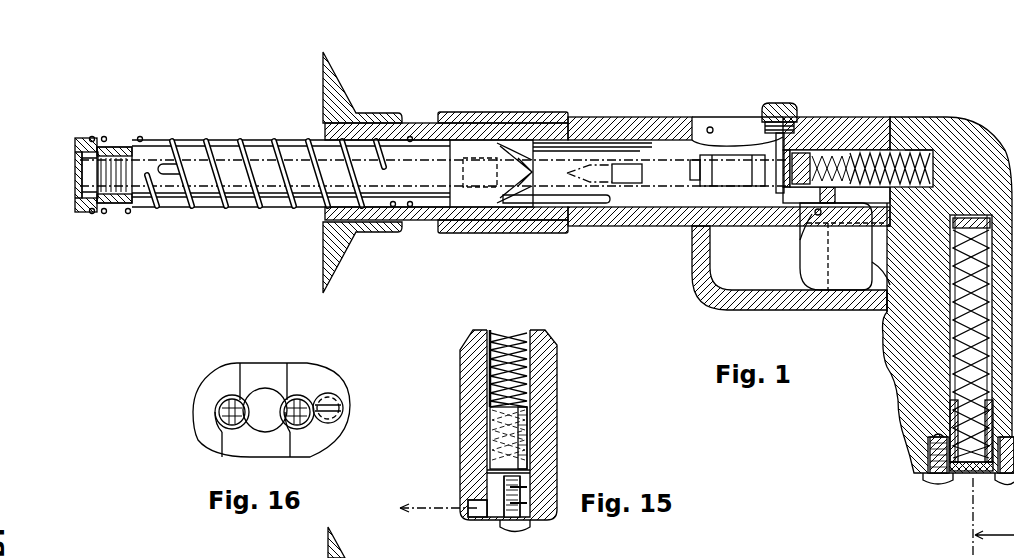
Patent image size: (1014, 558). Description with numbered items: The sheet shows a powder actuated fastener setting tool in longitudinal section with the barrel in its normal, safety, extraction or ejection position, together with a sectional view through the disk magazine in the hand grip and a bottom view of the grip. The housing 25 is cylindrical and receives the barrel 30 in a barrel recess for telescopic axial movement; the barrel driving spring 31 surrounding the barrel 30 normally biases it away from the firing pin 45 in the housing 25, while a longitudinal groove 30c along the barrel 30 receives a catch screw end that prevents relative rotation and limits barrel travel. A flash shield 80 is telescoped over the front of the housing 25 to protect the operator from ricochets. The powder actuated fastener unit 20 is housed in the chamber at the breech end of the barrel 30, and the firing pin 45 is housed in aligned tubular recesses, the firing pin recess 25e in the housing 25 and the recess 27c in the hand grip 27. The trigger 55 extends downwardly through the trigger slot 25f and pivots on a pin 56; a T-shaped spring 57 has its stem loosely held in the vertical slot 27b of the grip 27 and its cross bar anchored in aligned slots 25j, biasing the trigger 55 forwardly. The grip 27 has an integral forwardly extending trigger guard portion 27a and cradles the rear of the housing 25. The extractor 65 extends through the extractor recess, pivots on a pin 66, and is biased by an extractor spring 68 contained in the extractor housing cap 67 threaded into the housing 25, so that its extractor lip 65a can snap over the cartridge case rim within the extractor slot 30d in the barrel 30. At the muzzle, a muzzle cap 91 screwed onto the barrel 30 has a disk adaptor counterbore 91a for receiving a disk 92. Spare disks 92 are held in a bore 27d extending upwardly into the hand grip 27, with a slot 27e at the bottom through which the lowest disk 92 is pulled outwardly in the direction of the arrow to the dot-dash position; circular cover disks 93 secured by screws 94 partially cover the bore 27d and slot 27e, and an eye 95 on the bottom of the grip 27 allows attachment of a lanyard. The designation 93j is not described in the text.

In FIG. 1, the muzzle cap 91 is at (74, 143).
In FIG. 1, the disk adaptor counterbore 91a is at (76, 190).
In FIG. 1, the barrel 30 is at (179, 207).
In FIG. 1, the groove 30c is at (274, 178).
In FIG. 1, the extractor slot 30d is at (525, 165).
In FIG. 1, the barrel driving spring 31 is at (208, 141).
In FIG. 1, the flash shield 80 is at (342, 80).
In FIG. 1, the extractor 65 is at (748, 120).
In FIG. 1, the extractor lip 65a is at (642, 150).
In FIG. 1, the pin 66 is at (708, 126).
In FIG. 1, the extractor housing cap 67 is at (793, 103).
In FIG. 1, the extractor spring 68 is at (781, 138).
In FIG. 1, the powder actuated fastener unit 20 is at (712, 186).
In FIG. 1, the firing pin 45 is at (782, 191).
In FIG. 1, the housing 25 is at (878, 118).
In FIG. 1, the firing pin recess 25e is at (853, 148).
In FIG. 1, the trigger slot 25f is at (800, 216).
In FIG. 1, the slots 25j is at (886, 209).
In FIG. 1, the hand grip 27 is at (898, 380).
In FIG. 15, the hand grip 27 is at (557, 357).
In FIG. 16, the hand grip 27 is at (328, 377).
In FIG. 1, the trigger guard portion 27a is at (722, 297).
In FIG. 1, the vertical slot 27b is at (865, 312).
In FIG. 1, the recess 27c is at (912, 152).
In FIG. 15, the bore 27d is at (523, 432).
In FIG. 15, the slot 27e is at (478, 506).
In FIG. 1, the trigger 55 is at (803, 279).
In FIG. 1, the pin 56 is at (815, 217).
In FIG. 1, the spring 57 is at (870, 279).
In FIG. 15, the disk 92 is at (528, 503).
In FIG. 1, the circular cover disks 93 is at (946, 482).
In FIG. 15, the circular cover disks 93 is at (530, 521).
In FIG. 16, the circular cover disks 93 is at (318, 420).
In FIG. 1, the screw spacing 93j is at (995, 483).
In FIG. 1, the screws 94 is at (925, 481).
In FIG. 15, the screws 94 is at (513, 531).
In FIG. 16, the screws 94 is at (218, 416).
In FIG. 16, the eye 95 is at (338, 403).